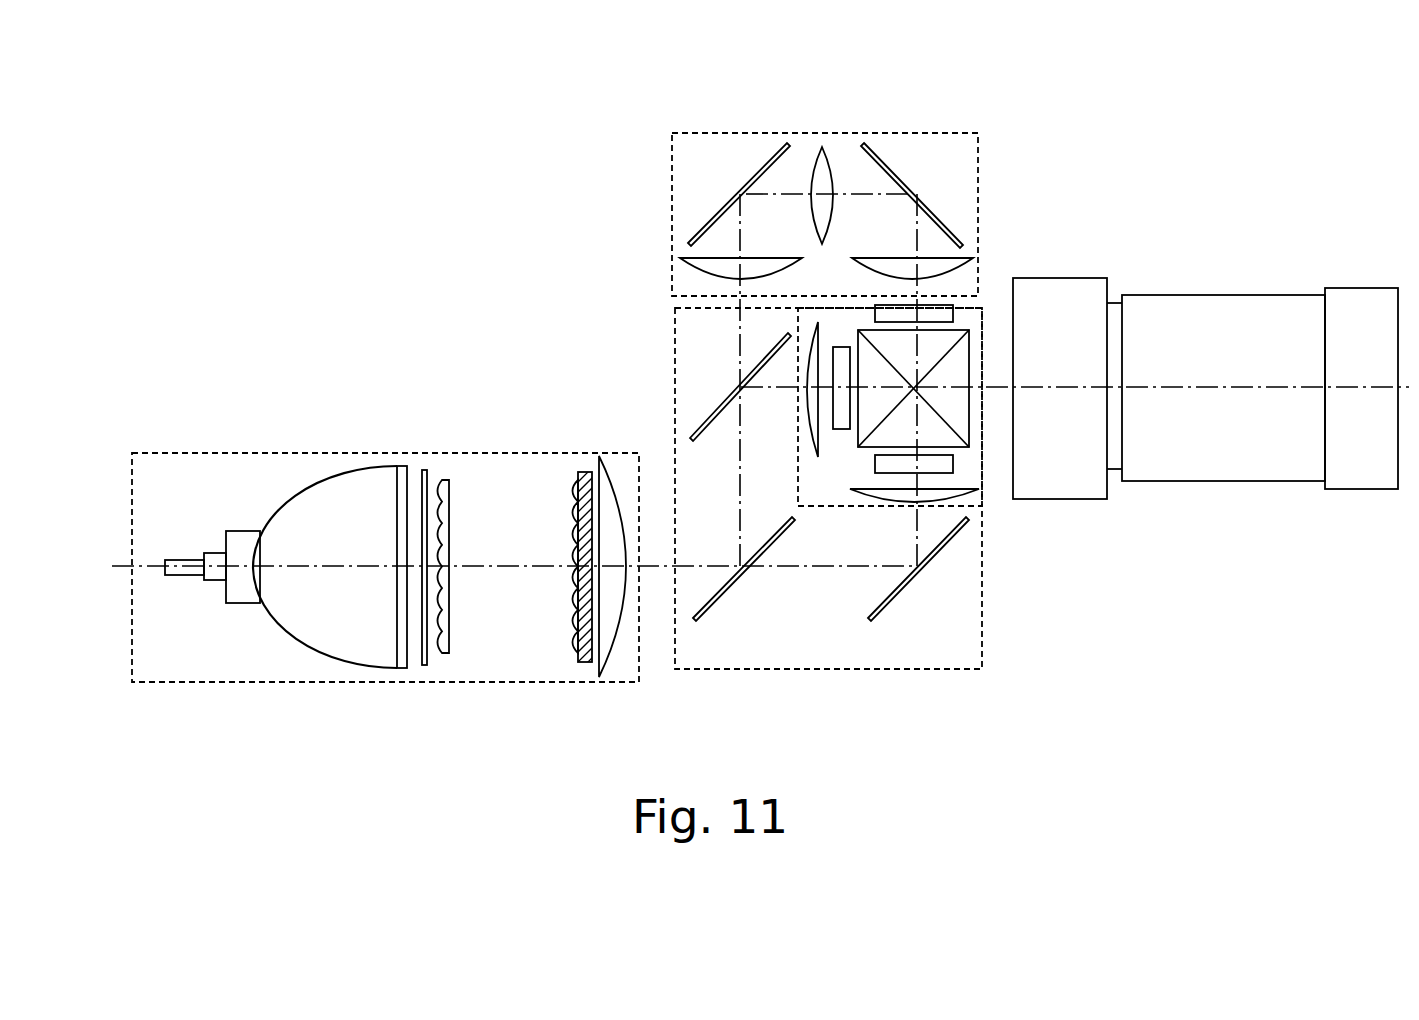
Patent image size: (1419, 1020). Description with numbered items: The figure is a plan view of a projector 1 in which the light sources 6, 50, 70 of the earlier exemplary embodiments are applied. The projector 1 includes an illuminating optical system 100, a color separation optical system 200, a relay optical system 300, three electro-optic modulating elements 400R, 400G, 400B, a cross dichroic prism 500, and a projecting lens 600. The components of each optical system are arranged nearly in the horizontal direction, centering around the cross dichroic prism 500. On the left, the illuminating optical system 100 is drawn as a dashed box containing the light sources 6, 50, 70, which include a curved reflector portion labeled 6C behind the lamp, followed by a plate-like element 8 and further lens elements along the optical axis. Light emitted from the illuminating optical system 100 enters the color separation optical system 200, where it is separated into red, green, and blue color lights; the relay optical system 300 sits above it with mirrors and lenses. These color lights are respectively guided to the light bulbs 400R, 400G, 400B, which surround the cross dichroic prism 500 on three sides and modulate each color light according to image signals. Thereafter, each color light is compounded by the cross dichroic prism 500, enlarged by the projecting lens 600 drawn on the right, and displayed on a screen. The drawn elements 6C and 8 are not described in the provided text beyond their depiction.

The projector 1 is at (1238, 134).
The illuminating optical system 100 is at (196, 452).
The light source 6 is at (296, 486).
The light source 50 is at (325, 609).
The light source 70 is at (325, 609).
The reflector 6C is at (328, 645).
The parallelizing lens 8 is at (405, 490).
The color separation optical system 200 is at (765, 670).
The relay optical system 300 is at (876, 130).
The electro-optic modulating element 400B is at (953, 313).
The electro-optic modulating element 400G is at (840, 429).
The electro-optic modulating element 400R is at (953, 465).
The cross dichroic prism 500 is at (968, 337).
The projecting lens 600 is at (1205, 483).